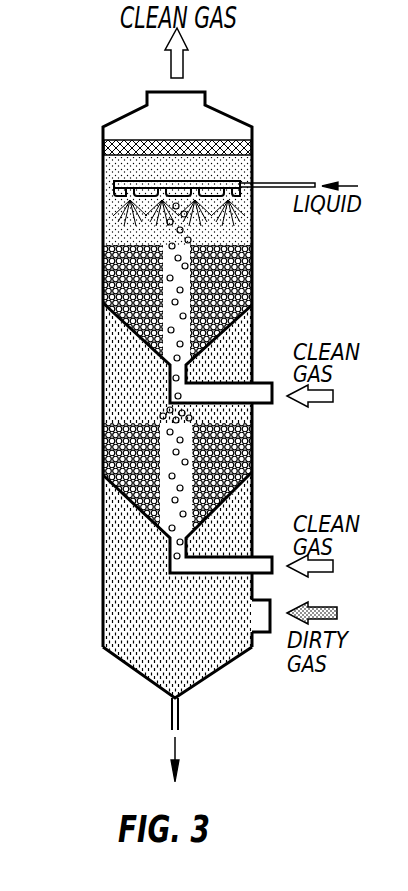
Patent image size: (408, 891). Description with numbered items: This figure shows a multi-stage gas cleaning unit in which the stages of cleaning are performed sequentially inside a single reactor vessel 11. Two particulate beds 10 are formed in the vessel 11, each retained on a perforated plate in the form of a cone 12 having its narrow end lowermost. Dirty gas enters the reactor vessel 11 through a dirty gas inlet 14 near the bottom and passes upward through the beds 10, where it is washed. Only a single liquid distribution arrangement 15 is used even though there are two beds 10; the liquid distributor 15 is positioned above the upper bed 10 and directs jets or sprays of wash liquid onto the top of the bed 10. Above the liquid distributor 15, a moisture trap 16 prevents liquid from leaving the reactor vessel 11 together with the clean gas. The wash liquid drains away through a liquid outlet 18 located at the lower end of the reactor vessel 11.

The particulate bed 10 is at (117, 270).
The reactor vessel 11 is at (102, 212).
The cone 12 is at (130, 335).
The dirty gas inlet 14 is at (261, 637).
The liquid distribution arrangement 15 is at (126, 181).
The moisture trap 16 is at (103, 150).
The liquid outlet 18 is at (171, 713).